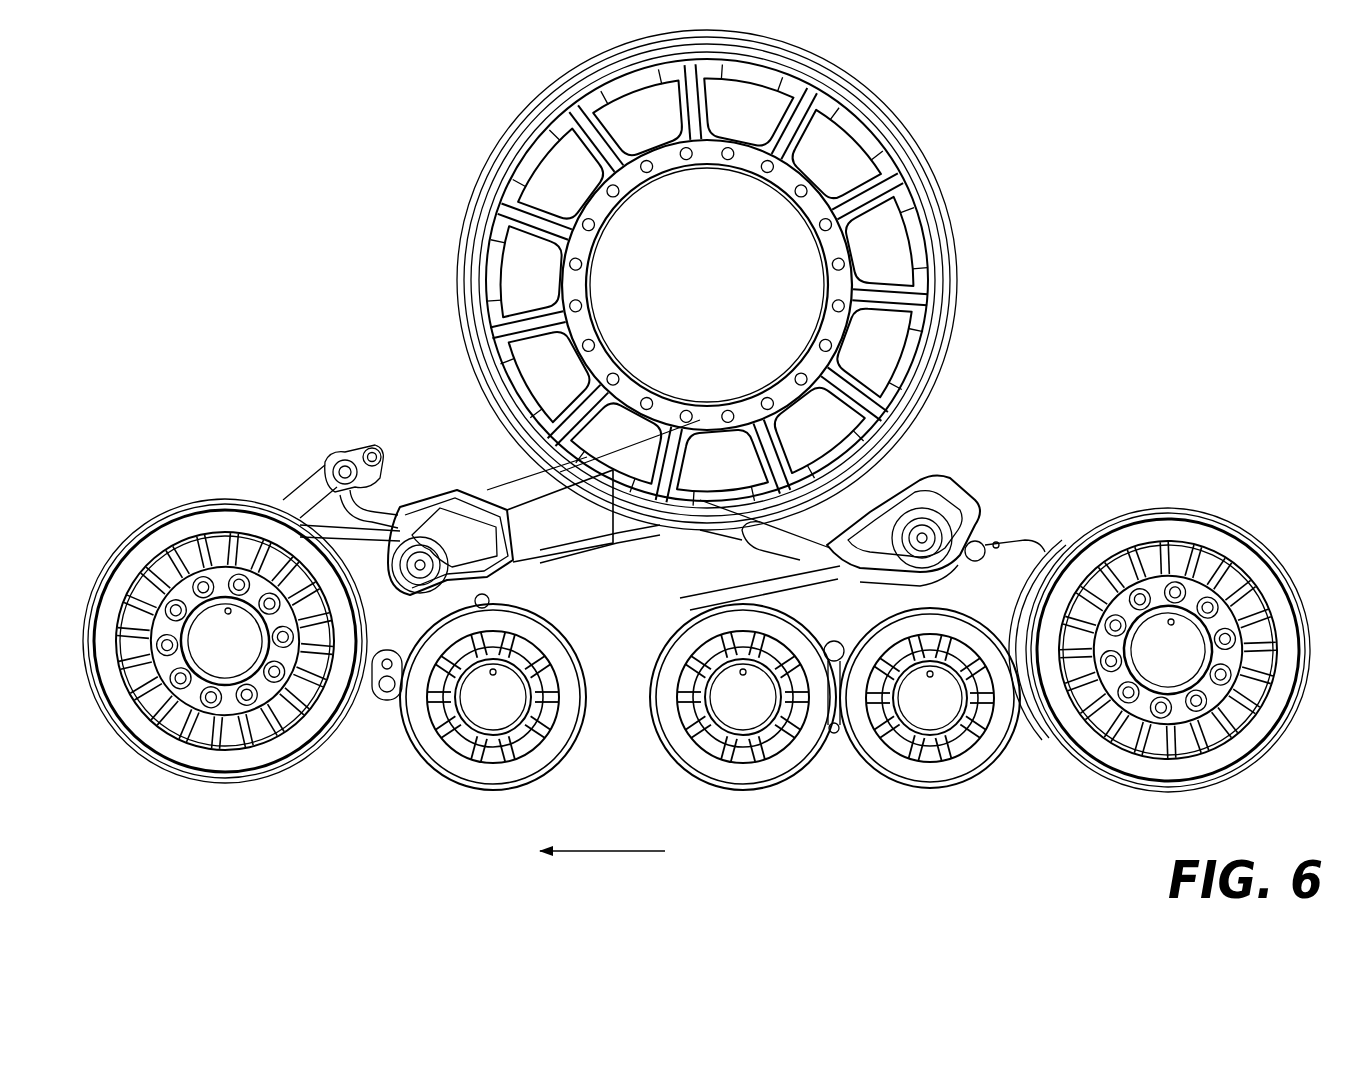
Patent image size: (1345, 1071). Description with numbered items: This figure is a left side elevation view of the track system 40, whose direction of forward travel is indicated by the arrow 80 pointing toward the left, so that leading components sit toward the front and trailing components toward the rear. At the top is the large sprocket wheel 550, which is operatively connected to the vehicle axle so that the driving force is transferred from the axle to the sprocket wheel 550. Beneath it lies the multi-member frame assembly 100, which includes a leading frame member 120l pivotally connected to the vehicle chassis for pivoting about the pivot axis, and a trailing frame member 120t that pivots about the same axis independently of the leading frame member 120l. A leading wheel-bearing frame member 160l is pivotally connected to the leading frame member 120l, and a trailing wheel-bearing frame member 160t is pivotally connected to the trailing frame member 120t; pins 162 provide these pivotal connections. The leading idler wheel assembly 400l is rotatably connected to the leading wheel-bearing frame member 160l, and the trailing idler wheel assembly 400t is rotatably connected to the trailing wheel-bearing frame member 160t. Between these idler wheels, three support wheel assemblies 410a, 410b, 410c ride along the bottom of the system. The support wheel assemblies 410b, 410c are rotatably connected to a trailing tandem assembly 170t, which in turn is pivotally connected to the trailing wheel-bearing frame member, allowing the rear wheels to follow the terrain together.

The track system 40 is at (1186, 118).
The sprocket wheel 550 is at (951, 242).
The multi-member frame assembly 100 is at (1065, 353).
The leading frame member 120l is at (512, 472).
The pins 162 is at (420, 562).
The trailing frame member 120t is at (955, 482).
The trailing wheel-bearing frame member 160t is at (1020, 556).
The leading wheel-bearing frame member 160l is at (388, 628).
The leading idler wheel assembly 400l is at (219, 789).
The support wheel assembly 410a is at (490, 793).
The arrow 80 is at (601, 852).
The support wheel assembly 410b is at (748, 793).
The trailing tandem assembly 170t is at (833, 740).
The support wheel assembly 410c is at (945, 793).
The trailing idler wheel assembly 400t is at (1150, 793).